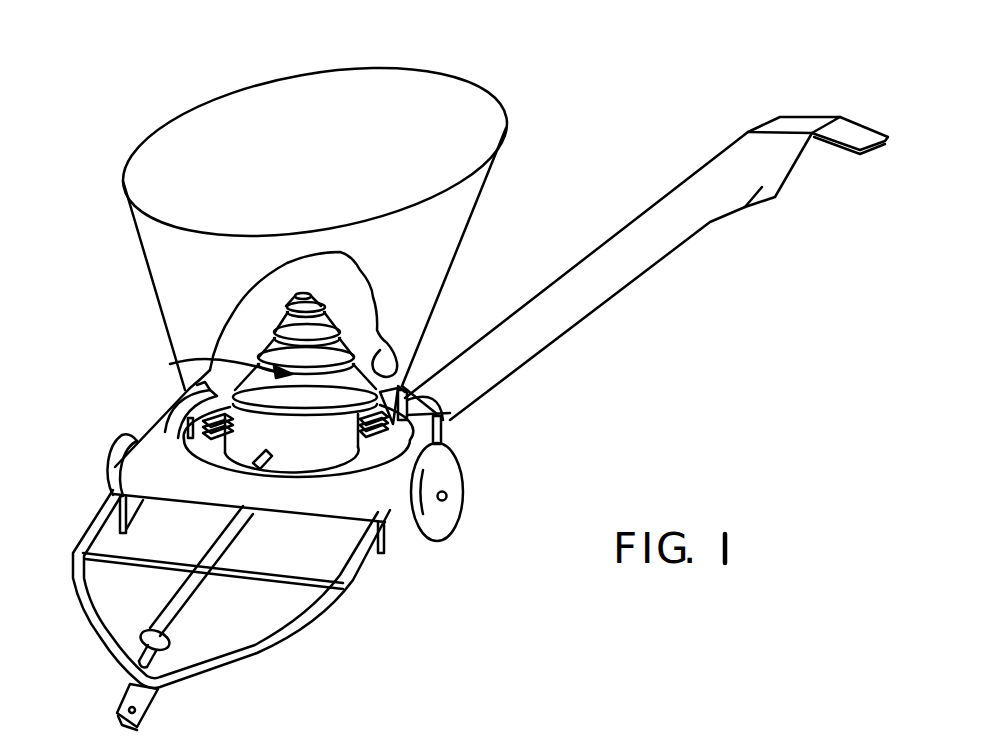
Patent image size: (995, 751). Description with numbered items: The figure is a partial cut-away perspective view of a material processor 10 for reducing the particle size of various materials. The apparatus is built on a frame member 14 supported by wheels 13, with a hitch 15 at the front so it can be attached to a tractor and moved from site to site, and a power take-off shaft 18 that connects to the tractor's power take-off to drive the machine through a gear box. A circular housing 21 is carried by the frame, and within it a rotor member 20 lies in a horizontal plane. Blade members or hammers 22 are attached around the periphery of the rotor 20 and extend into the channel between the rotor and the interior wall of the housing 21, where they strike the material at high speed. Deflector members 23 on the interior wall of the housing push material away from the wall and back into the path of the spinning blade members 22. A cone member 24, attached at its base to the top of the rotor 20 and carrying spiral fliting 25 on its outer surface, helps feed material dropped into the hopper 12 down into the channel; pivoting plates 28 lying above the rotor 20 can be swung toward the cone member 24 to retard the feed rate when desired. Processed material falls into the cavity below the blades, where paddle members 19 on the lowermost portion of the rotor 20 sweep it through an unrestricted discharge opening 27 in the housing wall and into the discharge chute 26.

The spreader 10 is at (206, 75).
The hopper 12 is at (473, 103).
The wheels 13 is at (452, 513).
The frame member 14 is at (305, 643).
The hitch 15 is at (152, 712).
The power take-off shaft 18 is at (182, 613).
The paddle members 19 is at (264, 470).
The rotor member 20 is at (313, 428).
The circular housing 21 is at (443, 425).
The blade members or hammers 22 is at (225, 462).
The deflector members 23 is at (187, 440).
The cone member 24 is at (214, 365).
The spiral fliting 25 is at (262, 325).
The discharge chute 26 is at (638, 227).
The discharge opening 27 is at (405, 385).
The pivoting plates 28 is at (172, 407).